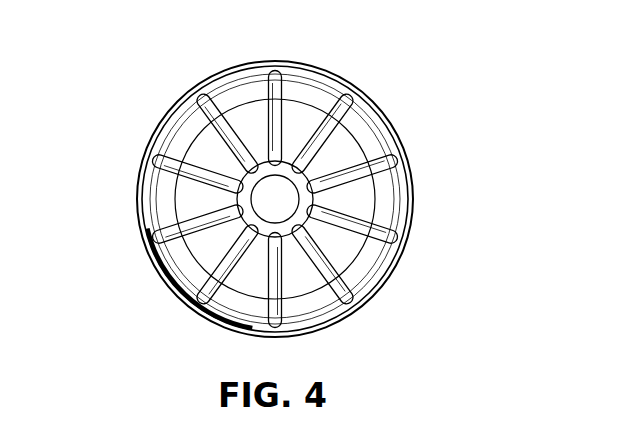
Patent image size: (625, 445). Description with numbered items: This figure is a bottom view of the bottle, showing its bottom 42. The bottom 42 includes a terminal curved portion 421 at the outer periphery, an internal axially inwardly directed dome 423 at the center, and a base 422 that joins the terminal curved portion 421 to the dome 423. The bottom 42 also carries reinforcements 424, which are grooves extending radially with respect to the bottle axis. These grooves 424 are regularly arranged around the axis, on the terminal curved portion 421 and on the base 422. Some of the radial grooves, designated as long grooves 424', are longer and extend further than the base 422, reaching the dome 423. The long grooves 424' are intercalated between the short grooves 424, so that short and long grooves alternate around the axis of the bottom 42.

The bottom 42 is at (158, 85).
The terminal curved portion 421 is at (300, 97).
The base 422 is at (338, 150).
The internal axially inwardly directed dome 423 is at (281, 204).
The reinforcements 424 is at (239, 171).
The long grooves 424' is at (163, 244).